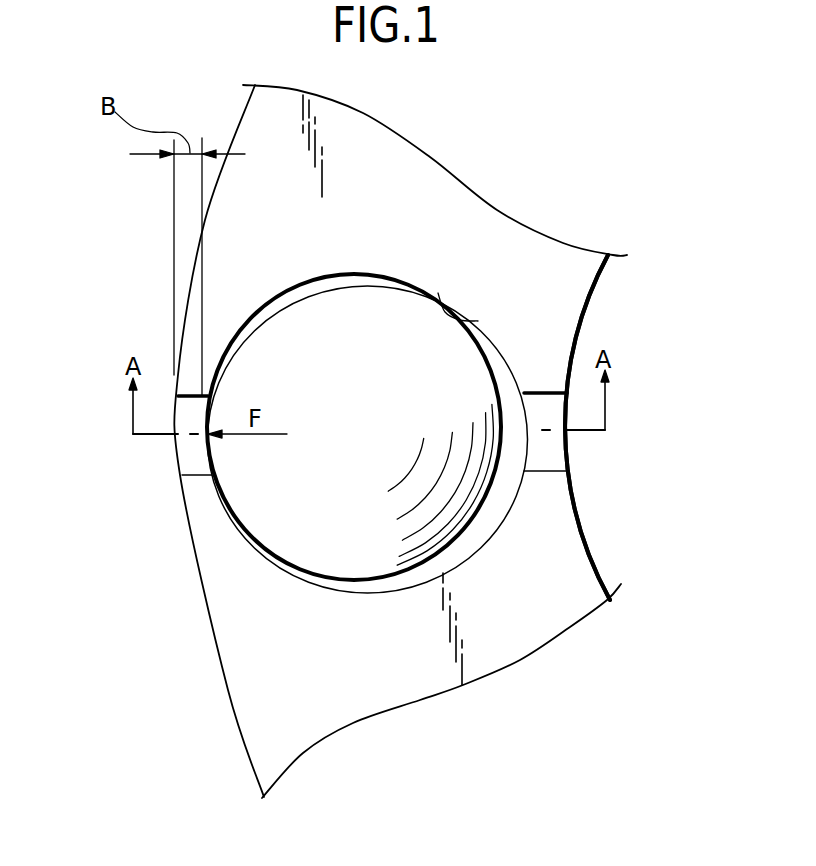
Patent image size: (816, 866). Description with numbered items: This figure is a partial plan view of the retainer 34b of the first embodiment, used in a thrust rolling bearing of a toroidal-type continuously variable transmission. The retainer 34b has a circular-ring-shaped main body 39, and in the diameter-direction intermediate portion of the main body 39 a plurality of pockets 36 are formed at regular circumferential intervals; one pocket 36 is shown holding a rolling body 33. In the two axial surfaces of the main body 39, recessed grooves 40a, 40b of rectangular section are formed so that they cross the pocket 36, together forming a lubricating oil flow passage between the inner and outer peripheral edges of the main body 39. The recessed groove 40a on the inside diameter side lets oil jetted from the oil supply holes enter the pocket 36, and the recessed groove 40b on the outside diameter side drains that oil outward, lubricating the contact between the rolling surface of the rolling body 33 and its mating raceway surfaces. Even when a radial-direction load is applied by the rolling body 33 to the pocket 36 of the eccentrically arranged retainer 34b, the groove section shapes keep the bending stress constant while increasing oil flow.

The rolling body 33 is at (260, 512).
The pocket 36 is at (478, 321).
The main body 39 is at (263, 108).
The recessed groove 40a is at (547, 470).
The recessed groove 40b is at (193, 475).
The retainer 34b is at (557, 547).